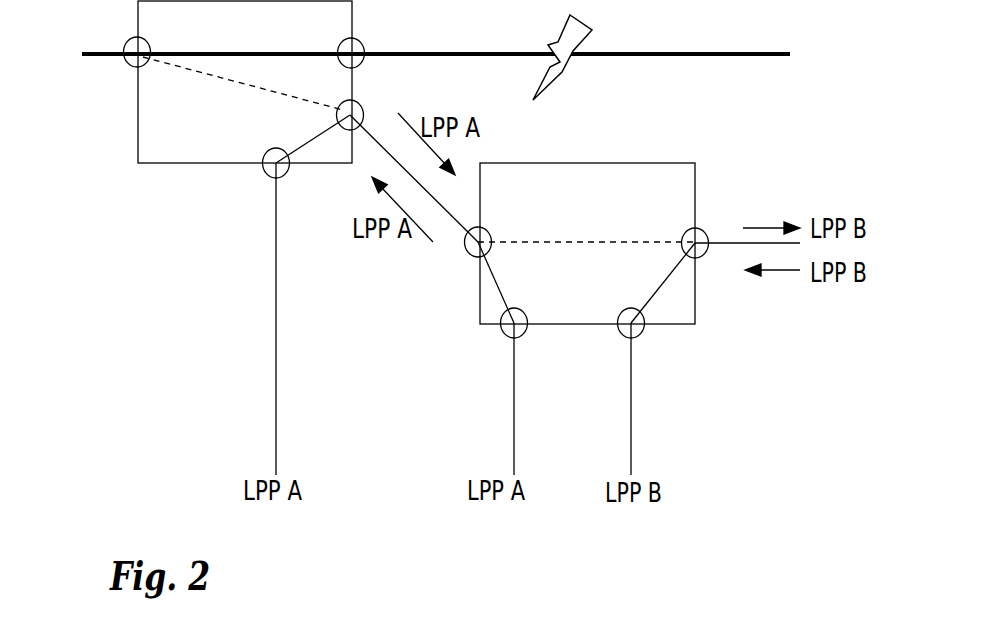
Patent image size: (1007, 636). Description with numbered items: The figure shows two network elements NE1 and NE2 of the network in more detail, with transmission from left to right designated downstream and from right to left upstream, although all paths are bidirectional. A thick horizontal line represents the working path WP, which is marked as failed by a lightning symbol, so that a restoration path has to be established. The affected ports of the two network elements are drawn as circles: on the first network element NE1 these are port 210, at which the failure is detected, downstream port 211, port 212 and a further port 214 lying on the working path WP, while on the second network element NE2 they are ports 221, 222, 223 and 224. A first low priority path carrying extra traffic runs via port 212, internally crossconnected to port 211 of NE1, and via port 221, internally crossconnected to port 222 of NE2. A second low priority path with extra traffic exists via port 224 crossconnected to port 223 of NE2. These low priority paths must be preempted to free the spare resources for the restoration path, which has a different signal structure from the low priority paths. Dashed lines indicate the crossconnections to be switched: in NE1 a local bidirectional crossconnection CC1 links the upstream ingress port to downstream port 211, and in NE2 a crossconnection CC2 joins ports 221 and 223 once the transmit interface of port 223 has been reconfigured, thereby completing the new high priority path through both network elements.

The port 210 is at (343, 40).
The port 211 is at (342, 105).
The port 212 is at (270, 147).
The port of network element NE1 on working path 214 is at (130, 37).
The port 221 is at (488, 235).
The port 222 is at (520, 308).
The port 223 is at (695, 227).
The port 224 is at (640, 338).
The network element NE1 is at (245, 82).
The network element NE2 is at (587, 243).
The working path WP is at (638, 53).
The crossconnection CC1 is at (240, 80).
The crossconnection CC2 is at (590, 242).